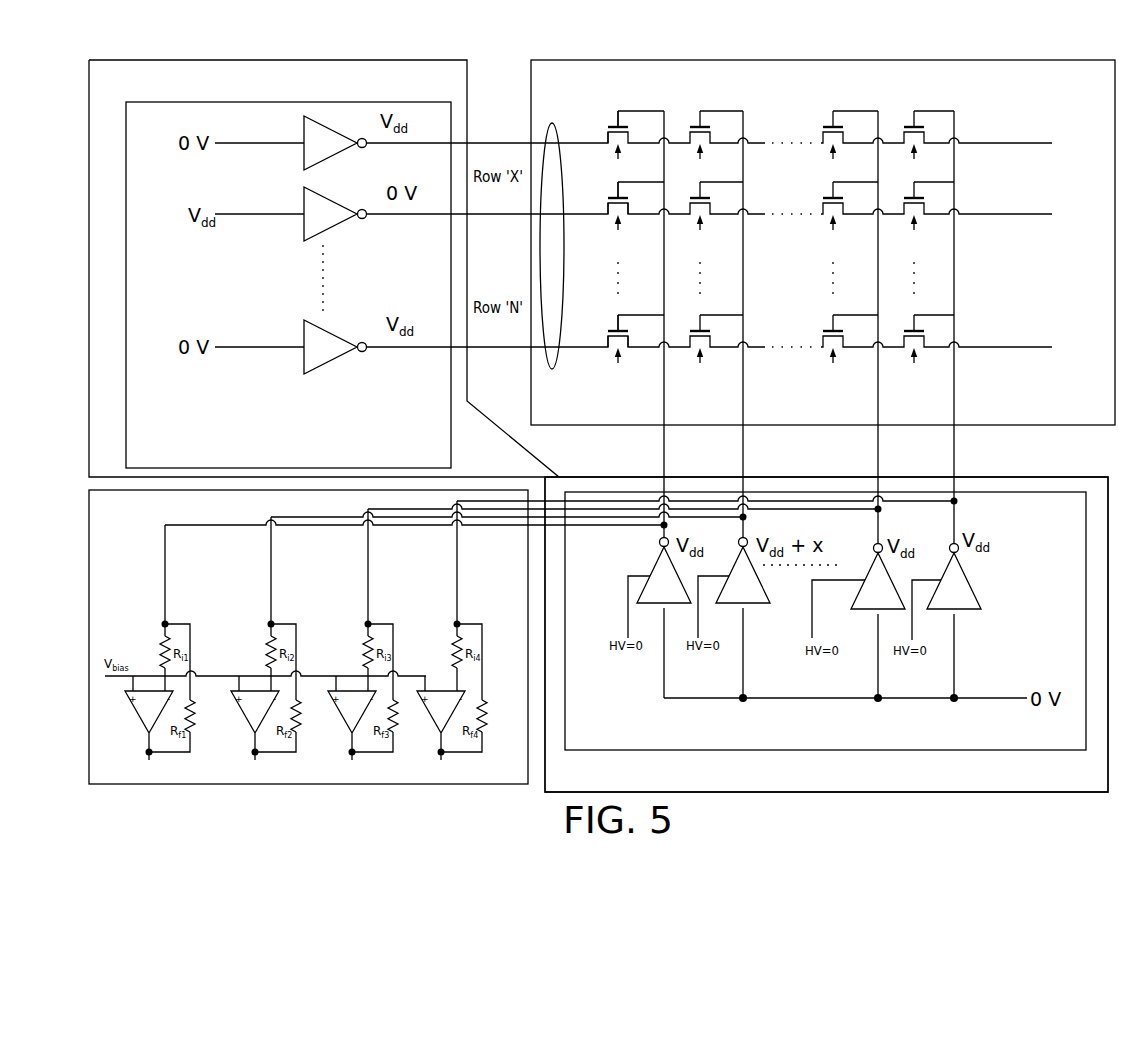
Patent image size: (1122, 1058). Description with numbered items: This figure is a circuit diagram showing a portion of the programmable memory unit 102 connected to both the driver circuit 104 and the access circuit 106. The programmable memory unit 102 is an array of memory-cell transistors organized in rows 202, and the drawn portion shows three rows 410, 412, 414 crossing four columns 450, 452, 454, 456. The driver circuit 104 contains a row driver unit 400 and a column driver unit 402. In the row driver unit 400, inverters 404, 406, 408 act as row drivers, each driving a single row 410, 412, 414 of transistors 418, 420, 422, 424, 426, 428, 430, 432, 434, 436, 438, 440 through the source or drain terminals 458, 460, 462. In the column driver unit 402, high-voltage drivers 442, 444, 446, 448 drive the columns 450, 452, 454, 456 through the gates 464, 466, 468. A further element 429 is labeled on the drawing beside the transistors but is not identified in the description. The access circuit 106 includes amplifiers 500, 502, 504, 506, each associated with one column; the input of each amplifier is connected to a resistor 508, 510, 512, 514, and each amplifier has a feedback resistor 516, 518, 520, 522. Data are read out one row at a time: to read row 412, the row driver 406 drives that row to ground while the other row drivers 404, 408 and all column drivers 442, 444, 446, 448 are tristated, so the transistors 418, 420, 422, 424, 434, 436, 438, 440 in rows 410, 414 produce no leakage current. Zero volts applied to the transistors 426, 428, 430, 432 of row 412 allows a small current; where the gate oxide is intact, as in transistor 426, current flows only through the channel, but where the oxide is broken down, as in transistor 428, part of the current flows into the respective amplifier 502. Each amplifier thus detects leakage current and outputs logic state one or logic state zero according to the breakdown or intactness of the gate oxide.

The programmable memory unit 102 is at (1100, 89).
The driver circuit 104 is at (1078, 777).
The access circuit 106 is at (258, 512).
The rows 202 is at (552, 123).
The row driver unit 400 is at (340, 446).
The column driver unit 402 is at (798, 743).
The inverter 404 is at (291, 143).
The inverter 406 is at (291, 214).
The inverter 408 is at (291, 347).
The row 410 is at (523, 143).
The row 412 is at (523, 214).
The row 414 is at (523, 347).
The transistor 418 is at (636, 141).
The transistor 420 is at (716, 141).
The transistor 422 is at (850, 141).
The transistor 424 is at (929, 141).
The transistor 426 is at (636, 212).
The transistor 428 is at (716, 212).
The drain region 429 is at (630, 211).
The transistor 430 is at (850, 212).
The transistor 432 is at (929, 212).
The transistor 434 is at (636, 345).
The transistor 436 is at (716, 345).
The transistor 438 is at (850, 345).
The transistor 440 is at (929, 345).
The high-voltage driver 442 is at (659, 618).
The high-voltage driver 444 is at (734, 618).
The high-voltage driver 446 is at (858, 621).
The high-voltage driver 448 is at (946, 621).
The column 450 is at (664, 473).
The column 452 is at (743, 473).
The column 454 is at (878, 473).
The column 456 is at (954, 473).
The terminal 458 is at (608, 137).
The terminal 460 is at (608, 207).
The terminal 462 is at (608, 340).
The gate 464 is at (617, 115).
The gate 466 is at (618, 186).
The gate 468 is at (616, 320).
The amplifier 500 is at (149, 718).
The amplifier 502 is at (255, 718).
The amplifier 504 is at (352, 718).
The amplifier 506 is at (441, 718).
The resistor 508 is at (151, 656).
The resistor 510 is at (257, 656).
The resistor 512 is at (354, 656).
The resistor 514 is at (443, 656).
The feedback resistor 516 is at (184, 688).
The feedback resistor 518 is at (290, 688).
The feedback resistor 520 is at (387, 688).
The feedback resistor 522 is at (476, 688).